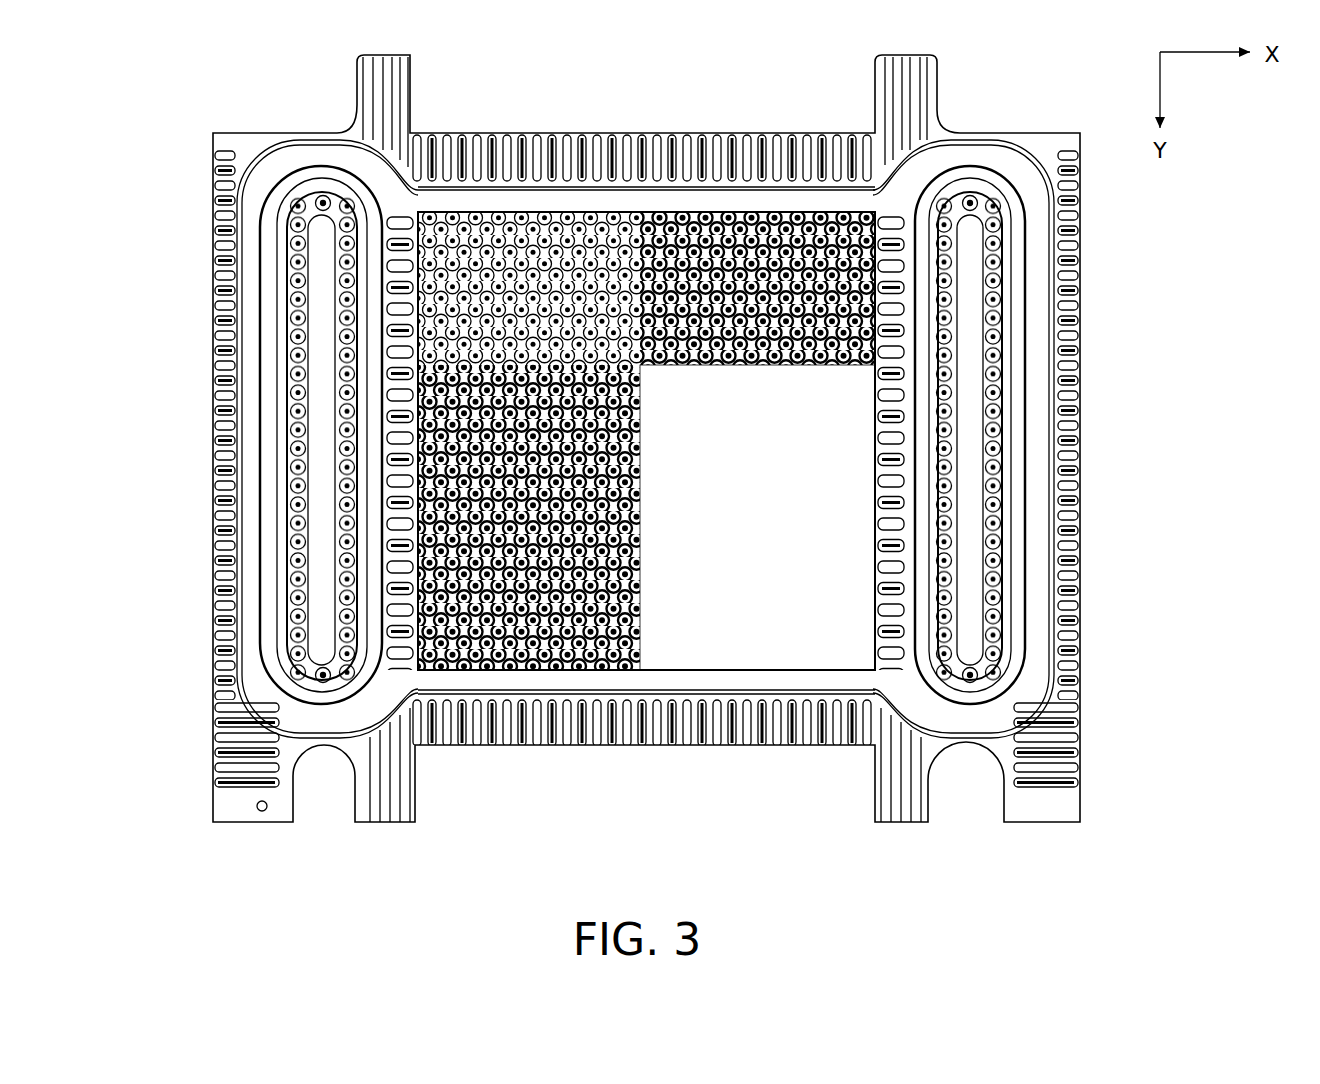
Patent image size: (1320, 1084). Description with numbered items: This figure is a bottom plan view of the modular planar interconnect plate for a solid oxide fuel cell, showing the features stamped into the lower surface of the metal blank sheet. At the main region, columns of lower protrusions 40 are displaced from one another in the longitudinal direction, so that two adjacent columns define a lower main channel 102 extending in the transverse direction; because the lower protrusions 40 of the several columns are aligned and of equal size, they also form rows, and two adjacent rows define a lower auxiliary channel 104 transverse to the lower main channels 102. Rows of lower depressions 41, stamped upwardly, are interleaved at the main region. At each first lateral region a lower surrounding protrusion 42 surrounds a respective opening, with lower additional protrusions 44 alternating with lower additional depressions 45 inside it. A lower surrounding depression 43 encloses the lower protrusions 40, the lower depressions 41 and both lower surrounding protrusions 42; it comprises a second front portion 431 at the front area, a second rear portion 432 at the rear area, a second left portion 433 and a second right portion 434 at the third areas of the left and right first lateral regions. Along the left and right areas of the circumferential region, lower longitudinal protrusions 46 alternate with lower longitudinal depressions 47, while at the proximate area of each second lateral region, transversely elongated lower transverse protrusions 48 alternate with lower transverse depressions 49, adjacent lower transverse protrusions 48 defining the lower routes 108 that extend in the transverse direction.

The lower protrusions 40 is at (598, 247).
The lower depressions 41 is at (723, 217).
The lower surrounding protrusions 42 is at (262, 267).
The lower surrounding depression 43 is at (245, 232).
The lower additional protrusions 44 is at (297, 296).
The lower additional depressions 45 is at (295, 390).
The lower longitudinal protrusions 46 is at (388, 483).
The lower longitudinal depressions 47 is at (388, 637).
The lower transverse protrusions 48 is at (491, 135).
The lower transverse depressions 49 is at (662, 138).
The lower main channels 102 is at (838, 220).
The lower auxiliary channels 104 is at (860, 519).
The lower routes 108 is at (785, 138).
The second front portion 431 is at (828, 695).
The second rear portion 432 is at (541, 186).
The second left portion 433 is at (245, 397).
The second right portion 434 is at (1058, 372).